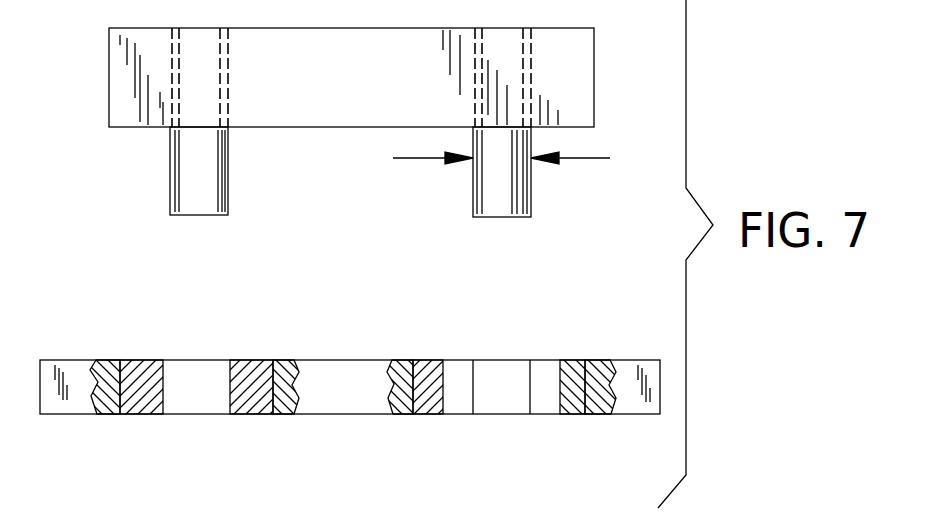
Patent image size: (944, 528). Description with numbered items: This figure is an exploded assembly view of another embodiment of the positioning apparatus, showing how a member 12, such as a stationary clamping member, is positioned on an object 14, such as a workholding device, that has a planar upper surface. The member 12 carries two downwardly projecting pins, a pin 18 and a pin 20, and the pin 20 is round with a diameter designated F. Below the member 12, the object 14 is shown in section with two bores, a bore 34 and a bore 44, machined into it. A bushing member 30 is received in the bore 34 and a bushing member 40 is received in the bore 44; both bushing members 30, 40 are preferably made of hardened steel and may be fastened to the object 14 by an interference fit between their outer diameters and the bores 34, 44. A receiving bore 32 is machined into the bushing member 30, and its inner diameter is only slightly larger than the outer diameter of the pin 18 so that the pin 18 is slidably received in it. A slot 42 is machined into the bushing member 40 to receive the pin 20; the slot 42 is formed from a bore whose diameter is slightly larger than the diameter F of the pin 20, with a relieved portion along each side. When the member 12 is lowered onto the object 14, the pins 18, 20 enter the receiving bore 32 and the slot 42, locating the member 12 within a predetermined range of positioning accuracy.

The member 12 is at (373, 95).
The pin 18 is at (170, 193).
The pin 20 is at (531, 193).
The diameter of pin F is at (491, 158).
The object 14 is at (370, 400).
The receiving bore 32 is at (163, 390).
The bore 34 is at (130, 378).
The bushing member 30 is at (245, 405).
The bushing member 40 is at (435, 414).
The slot 42 is at (558, 377).
The bore 44 is at (578, 380).